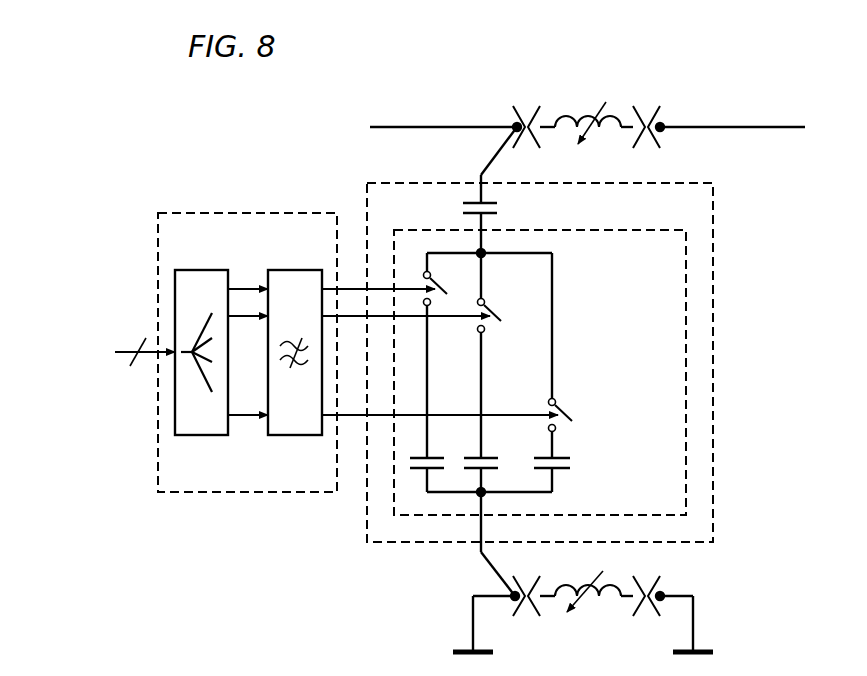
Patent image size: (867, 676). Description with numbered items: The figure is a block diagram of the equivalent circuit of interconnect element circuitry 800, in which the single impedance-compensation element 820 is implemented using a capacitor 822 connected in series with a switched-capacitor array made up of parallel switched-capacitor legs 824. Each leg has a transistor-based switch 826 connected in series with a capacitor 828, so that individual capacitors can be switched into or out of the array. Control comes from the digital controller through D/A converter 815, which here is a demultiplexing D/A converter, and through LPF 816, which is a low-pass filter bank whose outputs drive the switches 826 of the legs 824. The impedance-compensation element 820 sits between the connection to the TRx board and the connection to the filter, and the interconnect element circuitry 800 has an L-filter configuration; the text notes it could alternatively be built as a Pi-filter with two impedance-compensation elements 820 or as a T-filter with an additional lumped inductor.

The interconnect element circuitry 800 is at (264, 99).
The D/A converter 815 is at (203, 268).
The LPF 816 is at (296, 268).
The impedance-compensation element 820 is at (660, 183).
The capacitor 822 is at (503, 211).
The switched-capacitor legs 824 is at (566, 336).
The transistor-based switch 826 is at (558, 410).
The capacitor 828 is at (545, 458).